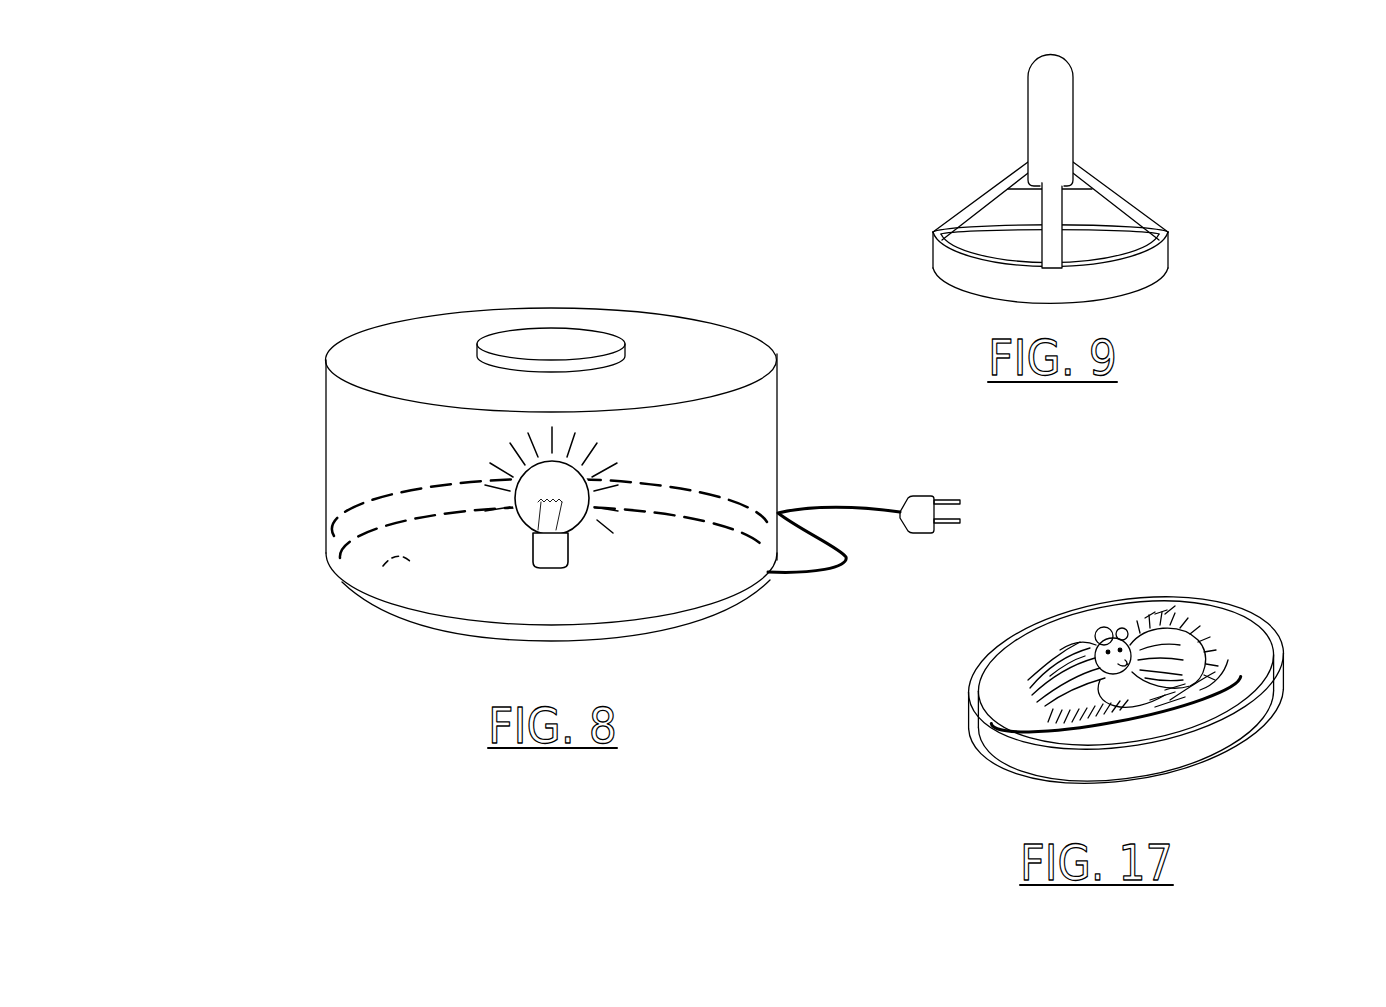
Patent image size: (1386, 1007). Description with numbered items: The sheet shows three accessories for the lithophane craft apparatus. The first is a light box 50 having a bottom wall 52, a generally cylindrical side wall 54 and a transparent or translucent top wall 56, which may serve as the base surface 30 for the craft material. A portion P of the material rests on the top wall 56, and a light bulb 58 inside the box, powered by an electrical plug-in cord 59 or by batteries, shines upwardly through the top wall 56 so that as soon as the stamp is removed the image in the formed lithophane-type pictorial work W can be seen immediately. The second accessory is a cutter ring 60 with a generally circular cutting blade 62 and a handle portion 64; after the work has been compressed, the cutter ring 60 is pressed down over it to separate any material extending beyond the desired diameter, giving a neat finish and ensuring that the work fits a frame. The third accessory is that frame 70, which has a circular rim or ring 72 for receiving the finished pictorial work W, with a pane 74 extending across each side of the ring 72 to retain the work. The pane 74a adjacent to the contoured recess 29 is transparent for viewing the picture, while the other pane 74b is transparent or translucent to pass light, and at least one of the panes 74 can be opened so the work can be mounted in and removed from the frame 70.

In FIG. 8, the base surface 30 is at (700, 325).
In FIG. 8, the light box 50 is at (795, 412).
In FIG. 8, the bottom wall 52 is at (383, 566).
In FIG. 8, the side wall 54 is at (326, 418).
In FIG. 8, the top wall 56 is at (403, 357).
In FIG. 8, the light bulb 58 is at (510, 523).
In FIG. 8, the electrical plug-in cord 59 is at (848, 561).
In FIG. 8, the portion of material (work piece) P is at (545, 336).
In FIG. 9, the cutter ring 60 is at (998, 88).
In FIG. 9, the cutting blade 62 is at (1171, 237).
In FIG. 9, the handle portion 64 is at (1068, 92).
In FIG. 17, the frame 70 is at (1110, 592).
In FIG. 17, the ring 72 is at (1290, 665).
In FIG. 17, the pane 74 is at (1198, 617).
In FIG. 17, the transparent pane 74a is at (1238, 676).
In FIG. 17, the translucent pane 74b is at (1190, 760).
In FIG. 17, the contoured recess 29 is at (1000, 650).
In FIG. 17, the lithophane-type pictorial work W is at (1009, 708).